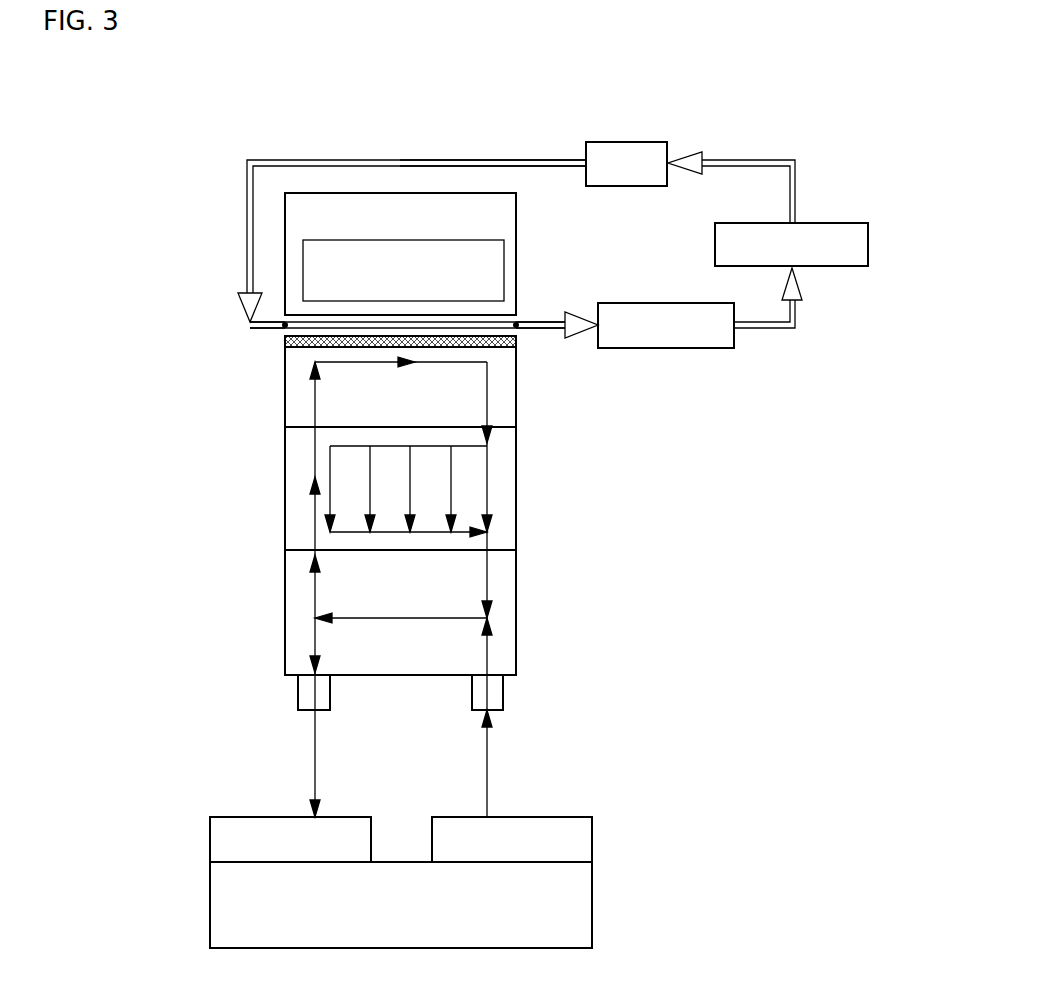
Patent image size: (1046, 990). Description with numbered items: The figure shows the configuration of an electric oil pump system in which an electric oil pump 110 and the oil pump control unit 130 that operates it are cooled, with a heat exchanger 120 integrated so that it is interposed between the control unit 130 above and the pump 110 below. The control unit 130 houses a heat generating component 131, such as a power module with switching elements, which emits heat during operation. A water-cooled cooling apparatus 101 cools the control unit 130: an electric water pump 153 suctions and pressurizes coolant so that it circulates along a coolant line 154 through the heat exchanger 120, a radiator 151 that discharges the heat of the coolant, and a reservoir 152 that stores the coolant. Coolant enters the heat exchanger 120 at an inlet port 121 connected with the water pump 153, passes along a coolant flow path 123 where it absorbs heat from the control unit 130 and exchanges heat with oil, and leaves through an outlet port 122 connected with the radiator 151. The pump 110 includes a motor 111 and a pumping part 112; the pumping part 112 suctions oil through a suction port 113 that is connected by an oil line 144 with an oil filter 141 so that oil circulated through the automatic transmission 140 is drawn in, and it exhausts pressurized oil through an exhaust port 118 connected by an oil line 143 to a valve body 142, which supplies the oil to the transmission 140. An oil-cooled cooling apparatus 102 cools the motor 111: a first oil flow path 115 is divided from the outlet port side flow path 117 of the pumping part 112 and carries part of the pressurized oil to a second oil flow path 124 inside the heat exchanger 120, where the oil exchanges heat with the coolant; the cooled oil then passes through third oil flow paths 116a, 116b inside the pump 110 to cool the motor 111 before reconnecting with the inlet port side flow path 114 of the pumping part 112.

The water-cooled cooling apparatus 101 is at (830, 168).
The oil-cooled cooling apparatus 102 is at (515, 470).
The electric oil pump 110 is at (255, 488).
The motor 111 is at (517, 503).
The pumping part 112 is at (517, 615).
The suction port 113 is at (503, 692).
The inlet port side flow path 114 is at (487, 655).
The first oil flow path 115 is at (315, 527).
The third oil flow path 116a is at (412, 462).
The third oil flow path 116b is at (487, 580).
The outlet port side flow path 117 is at (315, 638).
The exhaust port 118 is at (298, 693).
The heat exchanger 120 is at (285, 387).
The inlet port 121 is at (280, 330).
The outlet port 122 is at (545, 322).
The coolant flow path 123 is at (483, 318).
The oil flow path 124 is at (315, 407).
The oil pump control unit 130 is at (266, 236).
The heat generating component 131 is at (303, 268).
The transmission 140 is at (210, 905).
The oil filter 141 is at (592, 838).
The valve body 142 is at (210, 838).
The oil line 143 is at (315, 730).
The oil line 144 is at (488, 798).
The radiator 151 is at (685, 348).
The reservoir 152 is at (868, 243).
The water pump 153 is at (622, 142).
The coolant line 154 is at (395, 160).